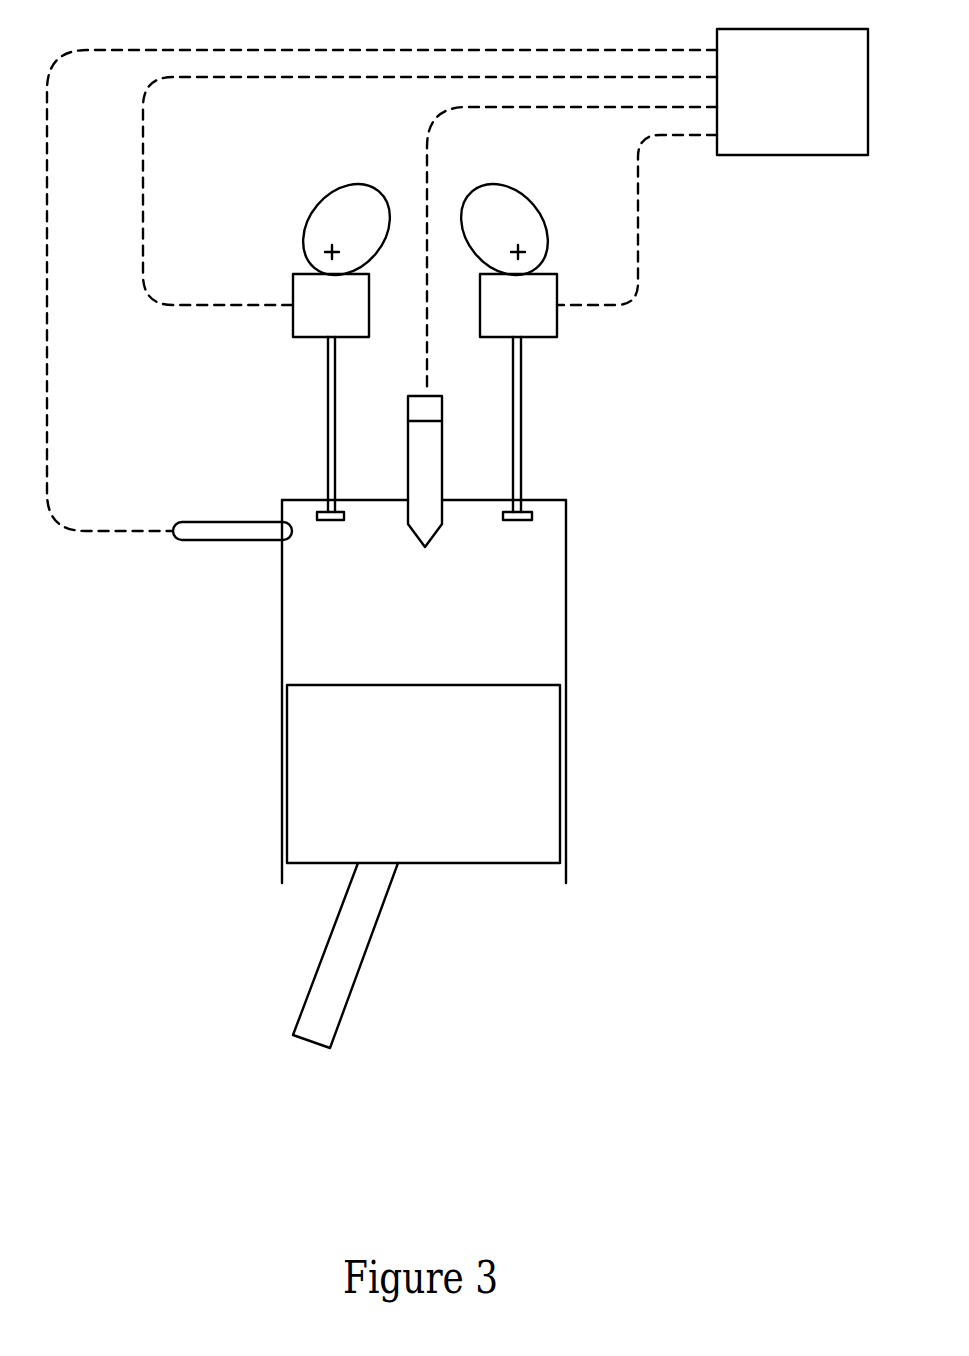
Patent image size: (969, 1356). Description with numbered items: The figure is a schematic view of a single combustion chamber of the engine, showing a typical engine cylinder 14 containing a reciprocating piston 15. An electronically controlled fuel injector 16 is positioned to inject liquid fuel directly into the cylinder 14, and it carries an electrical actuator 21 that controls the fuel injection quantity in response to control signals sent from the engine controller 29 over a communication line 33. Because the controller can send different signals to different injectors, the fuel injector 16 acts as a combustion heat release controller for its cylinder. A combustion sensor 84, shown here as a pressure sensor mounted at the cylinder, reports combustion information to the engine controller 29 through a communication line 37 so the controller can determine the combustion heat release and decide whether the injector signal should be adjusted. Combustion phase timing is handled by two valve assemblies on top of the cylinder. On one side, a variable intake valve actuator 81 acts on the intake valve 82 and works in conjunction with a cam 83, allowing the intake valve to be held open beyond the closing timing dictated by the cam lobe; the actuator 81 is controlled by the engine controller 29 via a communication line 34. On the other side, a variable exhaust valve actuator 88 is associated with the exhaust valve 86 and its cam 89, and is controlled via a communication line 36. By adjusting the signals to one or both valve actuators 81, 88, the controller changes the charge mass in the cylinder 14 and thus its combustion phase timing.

The engine cylinder 14 is at (345, 632).
The reciprocating piston 15 is at (478, 863).
The fuel injector 16 is at (442, 450).
The electrical actuator 21 is at (442, 397).
The engine controller 29 is at (793, 155).
The communication line 33 is at (427, 135).
The communication line 34 is at (638, 202).
The communication line 36 is at (143, 134).
The communication line 37 is at (47, 397).
The variable intake valve actuator 81 is at (557, 326).
The intake valve 82 is at (521, 450).
The cam 83 is at (537, 200).
The combustion sensor 84 is at (212, 540).
The exhaust valve 86 is at (335, 397).
The variable exhaust valve actuator 88 is at (293, 323).
The cam 89 is at (318, 200).